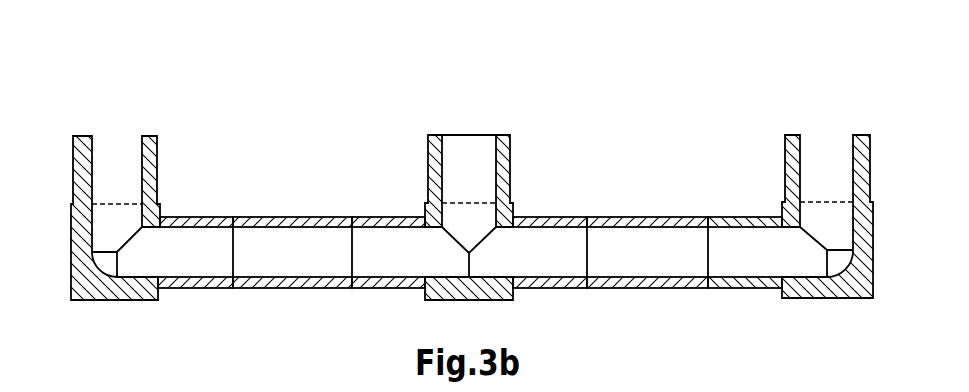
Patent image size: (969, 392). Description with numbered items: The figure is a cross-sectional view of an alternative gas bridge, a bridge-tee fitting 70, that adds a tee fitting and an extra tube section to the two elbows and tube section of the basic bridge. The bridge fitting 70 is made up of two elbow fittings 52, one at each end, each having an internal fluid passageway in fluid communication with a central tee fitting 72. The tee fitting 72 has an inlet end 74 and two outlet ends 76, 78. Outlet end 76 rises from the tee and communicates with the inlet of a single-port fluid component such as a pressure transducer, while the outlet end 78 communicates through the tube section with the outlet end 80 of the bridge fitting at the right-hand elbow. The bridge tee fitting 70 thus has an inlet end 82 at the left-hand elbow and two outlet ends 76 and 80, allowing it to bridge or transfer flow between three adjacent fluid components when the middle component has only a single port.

The bridge-tee fitting 70 is at (572, 92).
The tee fitting 72 is at (420, 157).
The inlet end 74 is at (383, 217).
The outlet end 76 is at (452, 135).
The outlet end 78 is at (558, 217).
The outlet end 80 is at (808, 147).
The inlet end 82 is at (113, 152).
The elbow fitting 52 is at (60, 220).